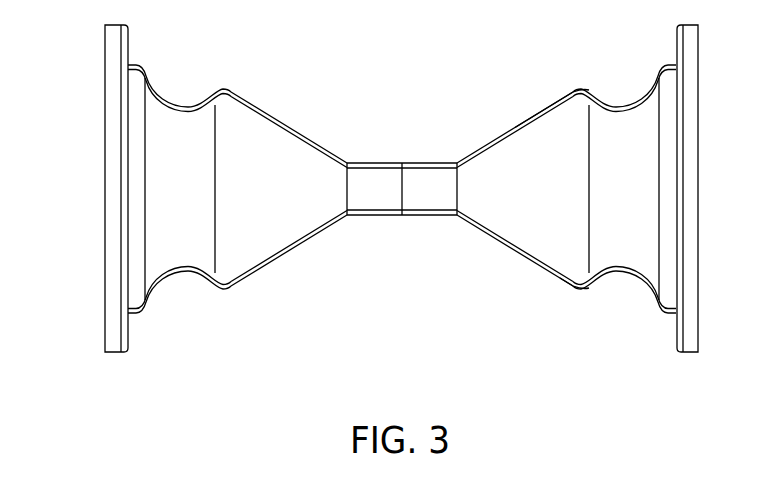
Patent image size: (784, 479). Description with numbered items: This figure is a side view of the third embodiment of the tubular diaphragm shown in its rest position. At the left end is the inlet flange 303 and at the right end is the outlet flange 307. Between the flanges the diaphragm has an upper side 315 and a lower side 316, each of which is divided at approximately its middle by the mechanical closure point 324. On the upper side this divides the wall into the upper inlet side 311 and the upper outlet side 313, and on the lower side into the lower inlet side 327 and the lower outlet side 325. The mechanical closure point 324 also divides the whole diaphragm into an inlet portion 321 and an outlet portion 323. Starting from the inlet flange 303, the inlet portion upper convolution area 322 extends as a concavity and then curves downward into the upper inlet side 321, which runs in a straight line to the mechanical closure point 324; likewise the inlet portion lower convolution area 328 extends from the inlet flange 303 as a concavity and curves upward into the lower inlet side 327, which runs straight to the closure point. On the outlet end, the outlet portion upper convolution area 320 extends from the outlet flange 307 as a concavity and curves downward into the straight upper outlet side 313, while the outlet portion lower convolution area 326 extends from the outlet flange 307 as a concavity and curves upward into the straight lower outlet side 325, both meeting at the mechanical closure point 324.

The inlet flange 303 is at (108, 95).
The outlet flange 307 is at (692, 298).
The upper inlet side 311 is at (269, 115).
The upper outlet side 313 is at (577, 91).
The upper side 315 is at (536, 115).
The lower side 316 is at (507, 248).
The outlet portion upper convolution area 320 is at (618, 103).
The inlet portion 321 is at (306, 137).
The inlet portion upper convolution area 322 is at (181, 104).
The outlet portion 323 is at (495, 139).
The mechanical closure point 324 is at (402, 163).
The lower outlet side 325 is at (566, 283).
The outlet portion lower convolution area 326 is at (623, 277).
The lower inlet side 327 is at (285, 255).
The inlet portion lower convolution area 328 is at (182, 276).